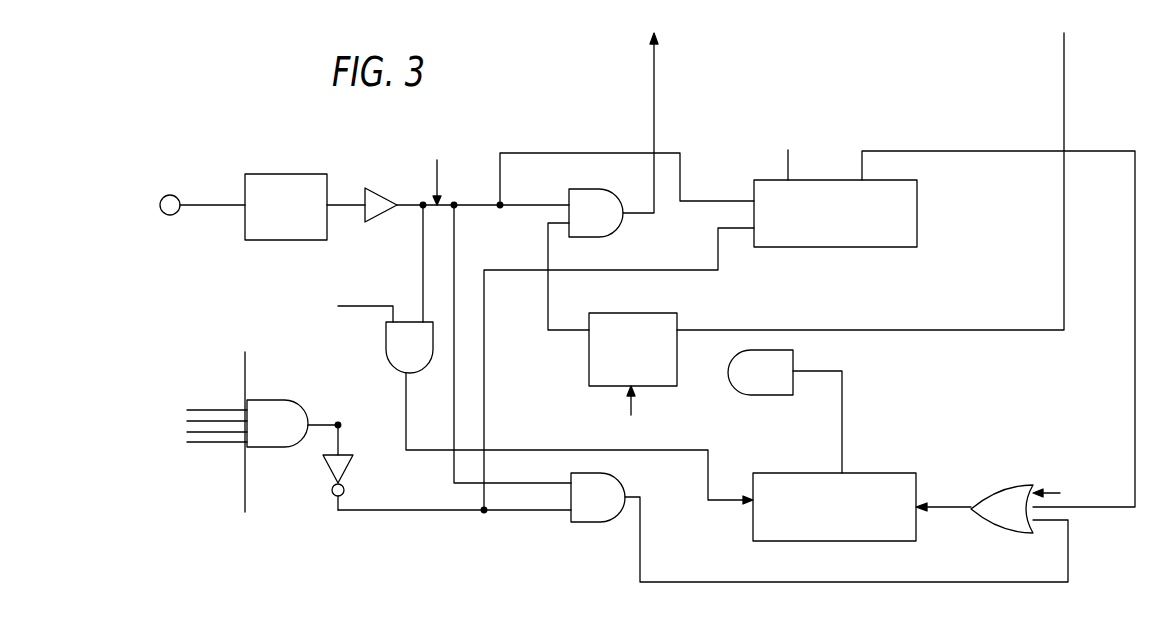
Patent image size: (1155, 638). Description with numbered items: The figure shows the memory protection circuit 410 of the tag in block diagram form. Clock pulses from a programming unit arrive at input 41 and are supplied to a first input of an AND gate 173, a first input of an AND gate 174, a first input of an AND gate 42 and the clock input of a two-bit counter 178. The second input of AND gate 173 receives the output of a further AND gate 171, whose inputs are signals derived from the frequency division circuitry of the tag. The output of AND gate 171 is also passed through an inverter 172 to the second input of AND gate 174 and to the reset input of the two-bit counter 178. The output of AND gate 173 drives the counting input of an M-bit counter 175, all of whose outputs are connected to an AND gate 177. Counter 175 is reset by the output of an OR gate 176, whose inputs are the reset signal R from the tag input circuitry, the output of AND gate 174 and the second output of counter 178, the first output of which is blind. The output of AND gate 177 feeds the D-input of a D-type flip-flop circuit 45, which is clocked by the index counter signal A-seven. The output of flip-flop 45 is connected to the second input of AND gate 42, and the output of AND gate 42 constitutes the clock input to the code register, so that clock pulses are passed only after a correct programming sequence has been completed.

The input 41 is at (286, 207).
The AND gate 42 is at (596, 213).
The D-type flip-flop circuit 45 is at (596, 358).
The AND gate 171 is at (277, 423).
The inverter 172 is at (330, 468).
The AND gate 173 is at (409, 347).
The AND gate 174 is at (598, 497).
The M-bit counter 175 is at (905, 482).
The OR gate 176 is at (1002, 509).
The AND gate 177 is at (760, 372).
The 2-bit counter 178 is at (836, 244).
The circuit 410 is at (388, 544).